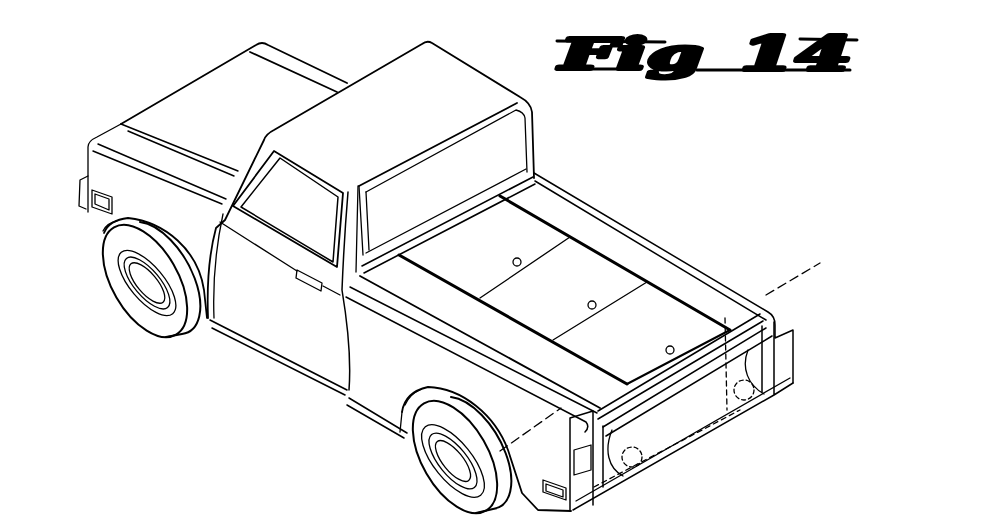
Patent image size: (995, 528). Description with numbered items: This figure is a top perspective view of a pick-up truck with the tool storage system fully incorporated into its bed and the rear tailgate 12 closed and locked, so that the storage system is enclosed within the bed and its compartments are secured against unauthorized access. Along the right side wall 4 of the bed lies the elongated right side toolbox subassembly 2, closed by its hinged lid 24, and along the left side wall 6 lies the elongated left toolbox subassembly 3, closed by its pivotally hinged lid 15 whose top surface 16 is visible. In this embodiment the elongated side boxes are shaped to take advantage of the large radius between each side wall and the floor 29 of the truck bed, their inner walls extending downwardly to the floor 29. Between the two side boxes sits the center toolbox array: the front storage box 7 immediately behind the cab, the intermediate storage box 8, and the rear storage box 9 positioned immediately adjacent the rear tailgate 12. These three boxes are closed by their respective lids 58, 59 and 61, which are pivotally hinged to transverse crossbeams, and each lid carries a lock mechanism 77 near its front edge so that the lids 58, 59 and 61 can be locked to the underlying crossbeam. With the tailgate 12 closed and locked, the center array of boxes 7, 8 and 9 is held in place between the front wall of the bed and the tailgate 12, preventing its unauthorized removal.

The right side toolbox subassembly 2 is at (572, 218).
The left toolbox subassembly 3 is at (389, 280).
The right side wall 4 is at (720, 283).
The left side wall 6 is at (397, 309).
The front storage box 7 is at (490, 251).
The intermediate storage box 8 is at (563, 307).
The rear storage box 9 is at (650, 351).
The rear tailgate 12 is at (681, 413).
The pivotally hinged lid 15 is at (443, 303).
The top surface 16 is at (495, 341).
The hinged lid 24 is at (639, 259).
The floor 29 is at (634, 475).
The lid 58 is at (512, 225).
The lid 59 is at (580, 268).
The lid 61 is at (652, 314).
The lock mechanism 77 is at (524, 241).